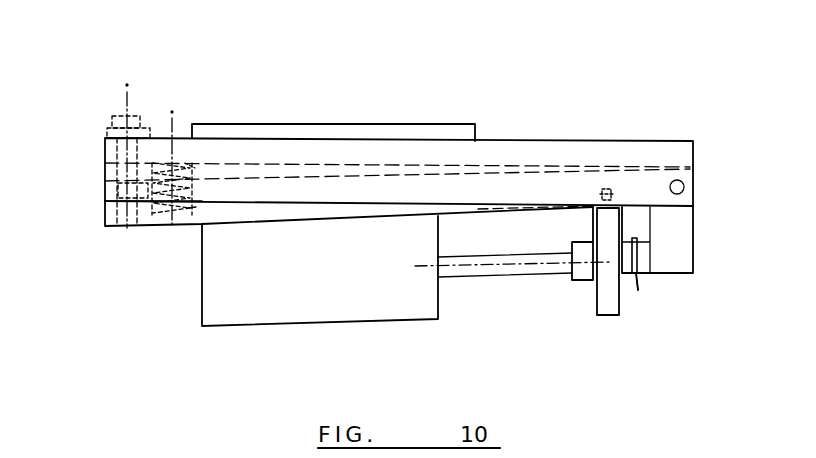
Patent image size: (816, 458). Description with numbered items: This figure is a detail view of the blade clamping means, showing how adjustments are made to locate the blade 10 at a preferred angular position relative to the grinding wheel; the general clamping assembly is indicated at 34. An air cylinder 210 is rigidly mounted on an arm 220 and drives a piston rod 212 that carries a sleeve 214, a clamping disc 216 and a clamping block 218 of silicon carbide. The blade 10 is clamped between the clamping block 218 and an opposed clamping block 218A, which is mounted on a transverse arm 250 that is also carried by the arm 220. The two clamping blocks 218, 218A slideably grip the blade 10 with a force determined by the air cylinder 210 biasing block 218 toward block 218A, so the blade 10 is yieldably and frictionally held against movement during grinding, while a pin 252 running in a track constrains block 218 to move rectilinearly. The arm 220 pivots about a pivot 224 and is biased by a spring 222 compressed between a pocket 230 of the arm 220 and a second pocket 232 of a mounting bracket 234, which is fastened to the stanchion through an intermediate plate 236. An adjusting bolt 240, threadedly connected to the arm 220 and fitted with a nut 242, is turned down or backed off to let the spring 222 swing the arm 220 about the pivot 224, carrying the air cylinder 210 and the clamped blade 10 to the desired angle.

The blade 10 is at (641, 287).
The bolt assembly 34 is at (455, 100).
The air cylinder 210 is at (347, 290).
The piston rod 212 is at (516, 281).
The sleeve 214 is at (582, 282).
The clamping disc 216 is at (609, 316).
The clamping block 218 is at (625, 258).
The opposed clamping block 218A is at (654, 255).
The arm 220 is at (105, 212).
The spring 222 is at (153, 162).
The pivot 224 is at (684, 184).
The pocket 230 is at (196, 207).
The second pocket 232 is at (192, 165).
The mounting bracket 234 is at (515, 150).
The intermediate plate 236 is at (396, 124).
The adjusting bolt 240 is at (115, 117).
The nut 242 is at (108, 133).
The transverse arm 250 is at (678, 232).
The pin 252 is at (604, 189).